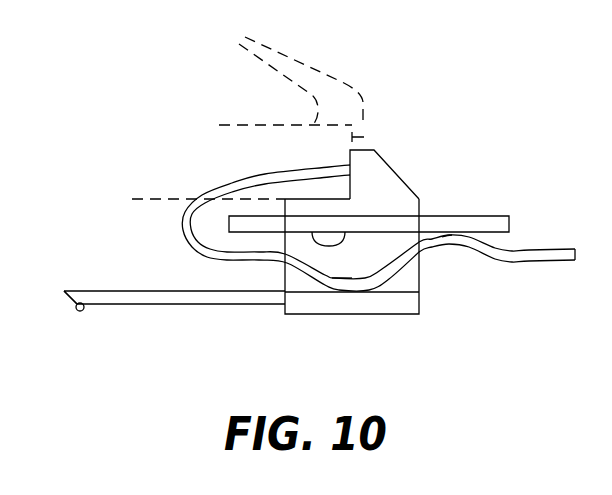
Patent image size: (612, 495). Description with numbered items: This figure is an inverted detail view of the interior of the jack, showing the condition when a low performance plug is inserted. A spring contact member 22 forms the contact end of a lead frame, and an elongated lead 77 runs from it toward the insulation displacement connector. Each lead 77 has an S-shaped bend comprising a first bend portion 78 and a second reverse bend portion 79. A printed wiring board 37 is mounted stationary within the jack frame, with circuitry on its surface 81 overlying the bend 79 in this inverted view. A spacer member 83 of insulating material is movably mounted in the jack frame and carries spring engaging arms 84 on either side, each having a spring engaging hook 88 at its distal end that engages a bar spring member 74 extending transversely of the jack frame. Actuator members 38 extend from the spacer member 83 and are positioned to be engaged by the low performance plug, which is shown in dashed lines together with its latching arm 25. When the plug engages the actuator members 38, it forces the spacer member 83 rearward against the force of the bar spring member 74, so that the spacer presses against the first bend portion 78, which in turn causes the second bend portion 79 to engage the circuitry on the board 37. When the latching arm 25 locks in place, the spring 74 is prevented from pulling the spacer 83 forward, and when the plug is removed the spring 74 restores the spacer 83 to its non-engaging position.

The spring contact member 22 is at (181, 228).
The latching member 25 is at (358, 63).
The printed wiring board 37 is at (495, 214).
The actuator member 38 is at (348, 158).
The bar spring member 74 is at (86, 306).
The lead 77 is at (518, 259).
The first bend portion 78 is at (332, 277).
The second reverse bend portion 79 is at (450, 232).
The surface 81 is at (310, 230).
The spacer member 83 is at (393, 312).
The spring engaging arm 84 is at (126, 289).
The spring engaging hook 88 is at (72, 305).